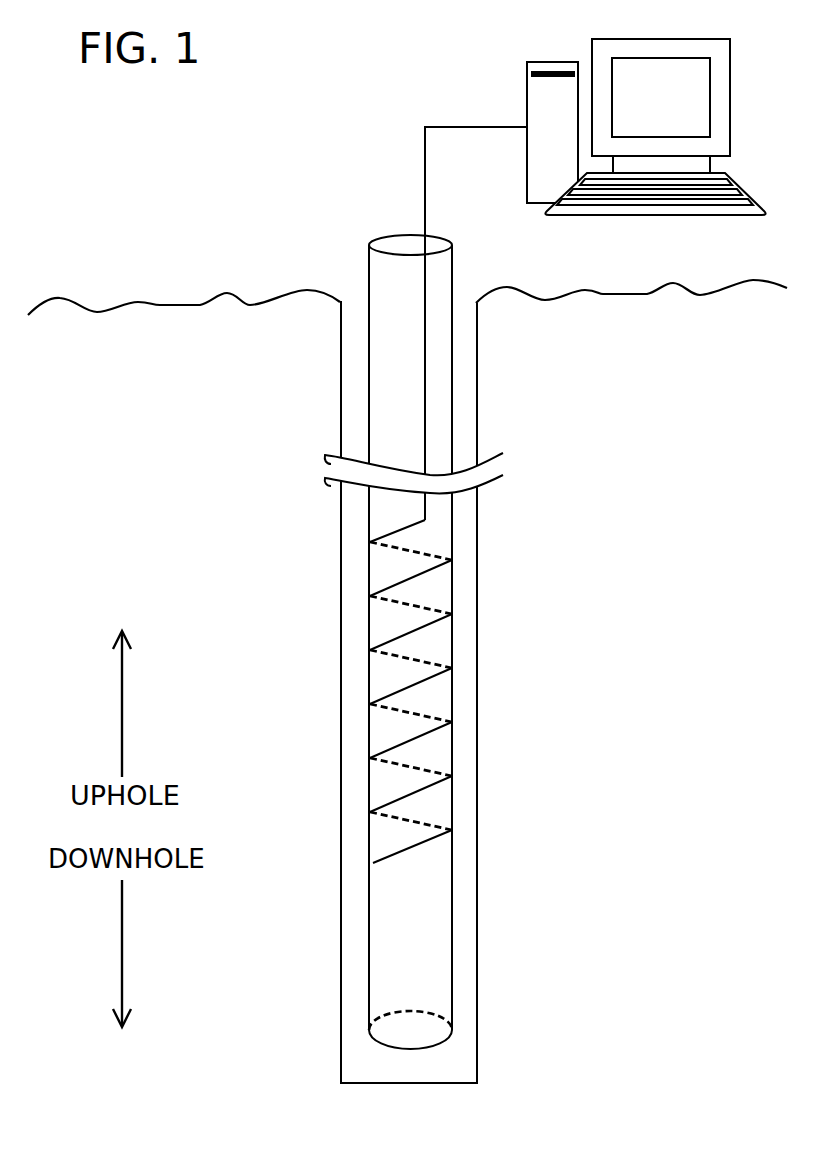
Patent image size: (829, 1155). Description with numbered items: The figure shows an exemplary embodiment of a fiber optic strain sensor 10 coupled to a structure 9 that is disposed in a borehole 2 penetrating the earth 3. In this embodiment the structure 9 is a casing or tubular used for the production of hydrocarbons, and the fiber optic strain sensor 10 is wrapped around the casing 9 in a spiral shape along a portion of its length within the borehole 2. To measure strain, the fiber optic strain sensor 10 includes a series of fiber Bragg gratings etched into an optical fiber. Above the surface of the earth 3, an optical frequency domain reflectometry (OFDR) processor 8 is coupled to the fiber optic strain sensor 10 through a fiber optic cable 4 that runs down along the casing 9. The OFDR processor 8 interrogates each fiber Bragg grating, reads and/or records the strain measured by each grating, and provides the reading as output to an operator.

The borehole 2 is at (477, 355).
The earth 3 is at (752, 358).
The fiber optic cable 4 is at (425, 175).
The optical frequency domain reflectometry (OFDR) processor 8 is at (527, 92).
The structure 9 is at (369, 269).
The fiber optic strain sensor 10 is at (390, 583).